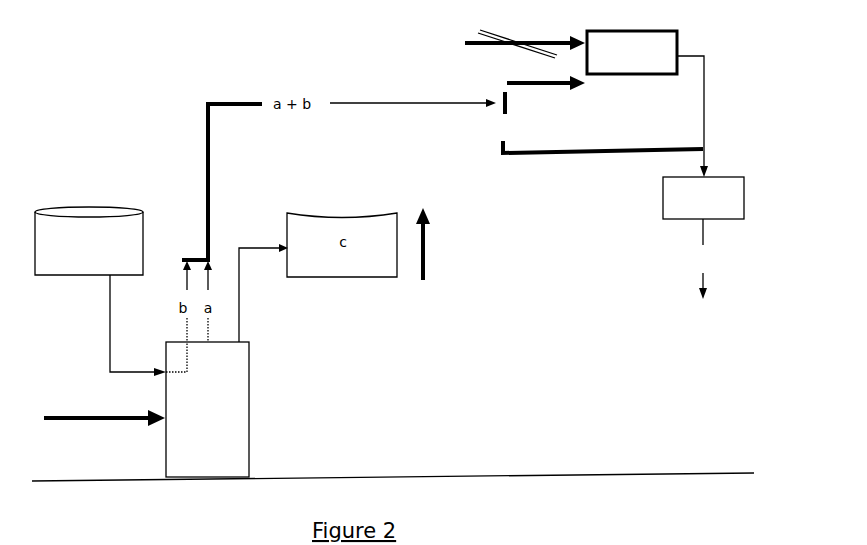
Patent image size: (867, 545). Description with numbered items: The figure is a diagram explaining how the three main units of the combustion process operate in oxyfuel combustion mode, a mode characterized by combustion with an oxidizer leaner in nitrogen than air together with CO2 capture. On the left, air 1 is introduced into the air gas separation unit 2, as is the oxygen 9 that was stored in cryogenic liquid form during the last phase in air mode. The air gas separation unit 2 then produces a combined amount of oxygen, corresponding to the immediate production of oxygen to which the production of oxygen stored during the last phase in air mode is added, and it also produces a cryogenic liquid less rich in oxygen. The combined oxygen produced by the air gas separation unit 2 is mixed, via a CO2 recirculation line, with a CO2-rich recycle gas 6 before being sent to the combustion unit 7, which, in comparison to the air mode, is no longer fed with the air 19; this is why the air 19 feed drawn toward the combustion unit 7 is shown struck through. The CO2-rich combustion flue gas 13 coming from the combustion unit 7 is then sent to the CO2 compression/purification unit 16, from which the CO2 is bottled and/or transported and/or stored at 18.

The air 1 is at (104, 410).
The air gas separation unit 2 is at (207, 409).
The CO2-rich recycle gas 6 is at (601, 114).
The combustion unit 7 is at (632, 52).
The oxygen stored in cryogenic liquid form 9 is at (111, 291).
The CO2-rich combustion flue gas 13 is at (704, 105).
The CO2 compression/purification unit 16 is at (703, 198).
The bottling, transport and/or storage 18 is at (697, 259).
The air 19 is at (506, 44).